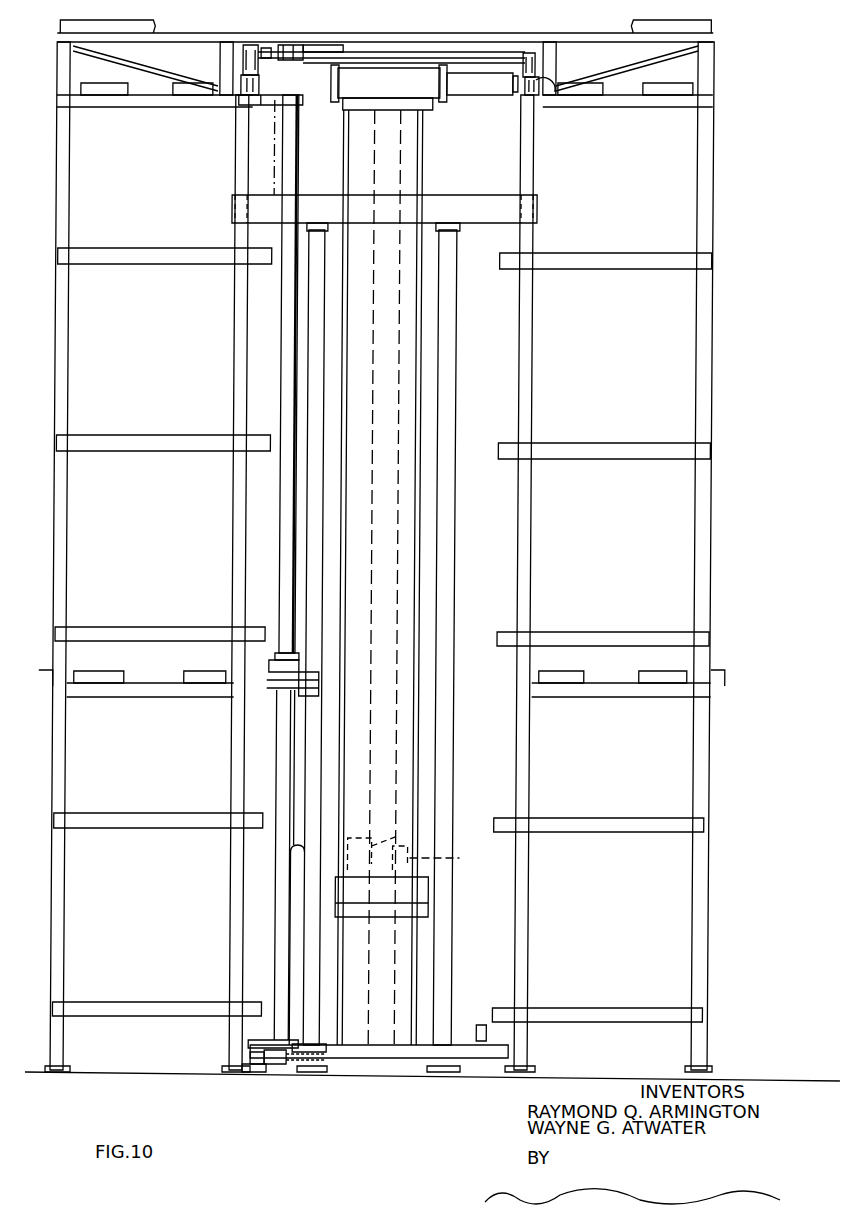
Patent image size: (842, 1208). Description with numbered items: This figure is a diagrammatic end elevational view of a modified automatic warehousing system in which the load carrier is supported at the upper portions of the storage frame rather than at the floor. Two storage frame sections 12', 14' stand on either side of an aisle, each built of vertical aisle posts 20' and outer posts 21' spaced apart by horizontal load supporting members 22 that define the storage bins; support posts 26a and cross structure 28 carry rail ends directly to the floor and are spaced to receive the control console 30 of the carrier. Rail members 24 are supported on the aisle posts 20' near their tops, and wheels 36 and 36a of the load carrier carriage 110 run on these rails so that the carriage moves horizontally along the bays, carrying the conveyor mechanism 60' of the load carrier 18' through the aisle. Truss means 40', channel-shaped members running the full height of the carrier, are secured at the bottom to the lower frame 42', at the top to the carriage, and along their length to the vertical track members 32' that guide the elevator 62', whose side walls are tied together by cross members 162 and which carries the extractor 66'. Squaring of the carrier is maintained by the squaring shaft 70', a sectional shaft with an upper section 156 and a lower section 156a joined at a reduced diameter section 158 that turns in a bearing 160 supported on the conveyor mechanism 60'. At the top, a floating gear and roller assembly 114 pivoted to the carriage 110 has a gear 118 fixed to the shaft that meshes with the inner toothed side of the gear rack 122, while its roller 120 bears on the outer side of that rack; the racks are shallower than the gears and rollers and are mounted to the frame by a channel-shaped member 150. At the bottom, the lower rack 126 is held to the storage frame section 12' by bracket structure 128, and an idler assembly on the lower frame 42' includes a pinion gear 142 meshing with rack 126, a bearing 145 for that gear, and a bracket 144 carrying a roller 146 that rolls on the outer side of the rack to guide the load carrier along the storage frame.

The storage frame section 12' is at (361, 546).
The storage frame section 14' is at (630, 557).
The load carrier 18' is at (449, 603).
The aisle post 20' is at (381, 576).
The post 21' is at (426, 820).
The load supporting member 22 is at (207, 262).
The rail member 24 is at (240, 84).
The support post 26a is at (310, 752).
The cross structure 28 is at (384, 422).
The control console 30 is at (420, 892).
The track member 32' is at (430, 577).
The wheel 36 is at (238, 58).
The wheel 36a is at (526, 52).
The truss means 40' is at (415, 577).
The lower frame 42' is at (379, 1074).
The conveyor mechanism 60' is at (447, 608).
The elevator 62' is at (449, 838).
The extractor 66' is at (487, 1001).
The squaring shaft 70' is at (318, 608).
The load carrier carriage 110 is at (478, 96).
The floating gear and roller assembly 114 is at (313, 40).
The gear 118 is at (288, 40).
The roller 120 is at (250, 47).
The gear rack 122 is at (300, 97).
The lower rack 126 is at (278, 1066).
The bracket structure 128 is at (254, 1058).
The pinion gear 142 is at (292, 1062).
The bracket 144 is at (290, 1040).
The bearing 145 is at (320, 1050).
The roller 146 is at (250, 1073).
The channel-shaped member 150 is at (283, 45).
The upper section 156 is at (282, 340).
The lower section 156a is at (282, 850).
The reduced diameter section 158 is at (272, 663).
The bearing 160 is at (280, 688).
The cross member 162 is at (400, 834).